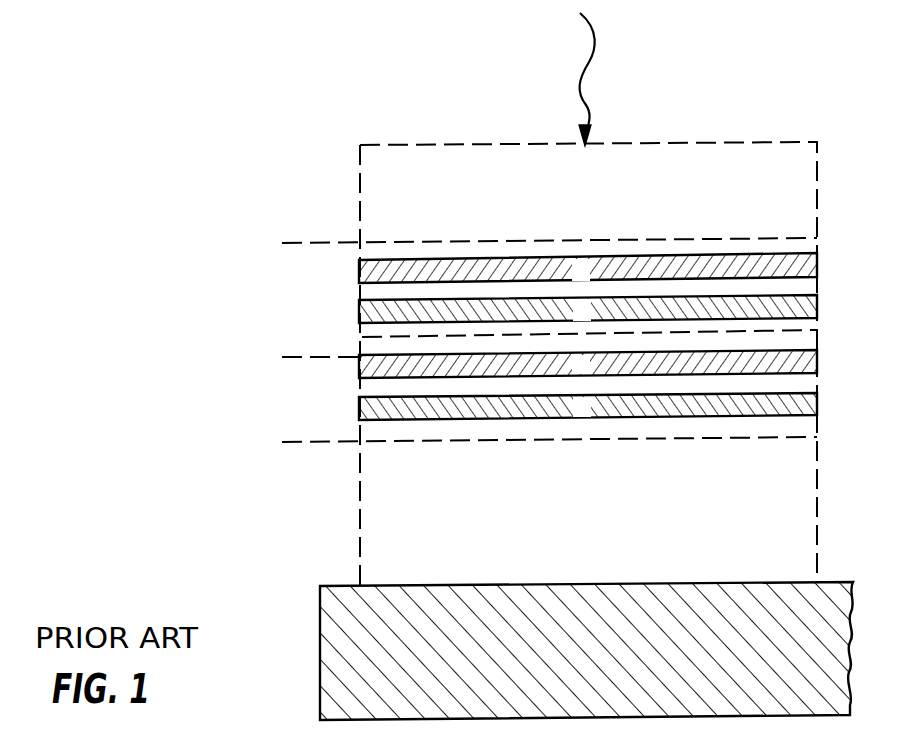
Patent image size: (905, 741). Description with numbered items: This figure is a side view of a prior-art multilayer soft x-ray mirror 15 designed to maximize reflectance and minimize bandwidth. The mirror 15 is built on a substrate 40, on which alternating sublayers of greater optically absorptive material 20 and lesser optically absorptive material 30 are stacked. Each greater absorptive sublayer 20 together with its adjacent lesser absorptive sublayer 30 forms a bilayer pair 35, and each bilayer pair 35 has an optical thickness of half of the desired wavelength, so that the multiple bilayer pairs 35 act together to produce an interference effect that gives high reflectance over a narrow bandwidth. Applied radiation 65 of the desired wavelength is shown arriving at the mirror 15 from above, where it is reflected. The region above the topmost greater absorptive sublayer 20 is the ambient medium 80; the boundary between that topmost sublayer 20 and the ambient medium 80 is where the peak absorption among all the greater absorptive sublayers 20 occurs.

The mirror 15 is at (186, 519).
The greater optically absorptive material 20 is at (800, 253).
The lesser optically absorptive material 30 is at (361, 306).
The bilayer pair 35 is at (280, 243).
The substrate 40 is at (320, 676).
The applied radiation 65 is at (588, 104).
The ambient medium 80 is at (690, 114).